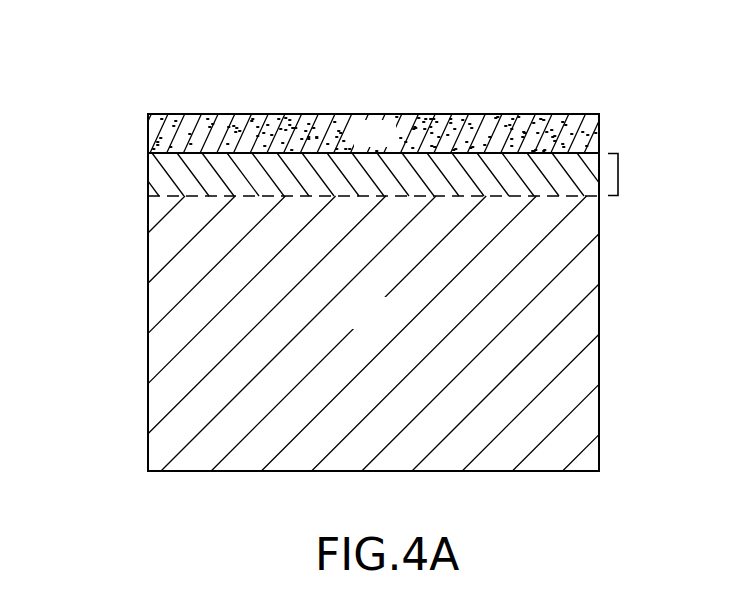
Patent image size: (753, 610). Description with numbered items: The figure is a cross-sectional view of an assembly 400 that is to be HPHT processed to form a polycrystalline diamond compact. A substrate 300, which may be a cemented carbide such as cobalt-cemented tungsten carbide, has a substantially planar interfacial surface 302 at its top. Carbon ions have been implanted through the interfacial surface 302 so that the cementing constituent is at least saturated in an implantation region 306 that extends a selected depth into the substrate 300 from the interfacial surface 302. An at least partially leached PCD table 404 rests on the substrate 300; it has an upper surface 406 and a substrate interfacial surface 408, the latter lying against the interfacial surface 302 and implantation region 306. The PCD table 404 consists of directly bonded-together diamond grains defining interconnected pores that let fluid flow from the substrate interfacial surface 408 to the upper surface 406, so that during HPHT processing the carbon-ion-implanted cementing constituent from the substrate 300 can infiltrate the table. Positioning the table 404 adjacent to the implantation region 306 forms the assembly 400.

The substrate 300 is at (393, 324).
The interfacial surface 302 is at (163, 152).
The substrate interfacial surface 408 is at (163, 152).
The implantation region 306 is at (618, 174).
The at least partially leached PCD table 404 is at (391, 144).
The upper surface 406 is at (237, 114).
The assembly 400 is at (560, 78).